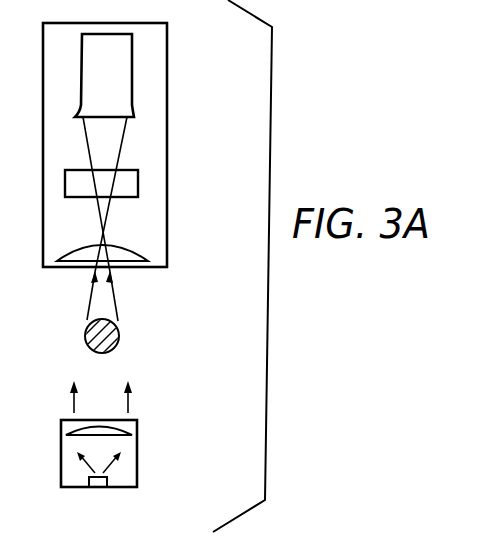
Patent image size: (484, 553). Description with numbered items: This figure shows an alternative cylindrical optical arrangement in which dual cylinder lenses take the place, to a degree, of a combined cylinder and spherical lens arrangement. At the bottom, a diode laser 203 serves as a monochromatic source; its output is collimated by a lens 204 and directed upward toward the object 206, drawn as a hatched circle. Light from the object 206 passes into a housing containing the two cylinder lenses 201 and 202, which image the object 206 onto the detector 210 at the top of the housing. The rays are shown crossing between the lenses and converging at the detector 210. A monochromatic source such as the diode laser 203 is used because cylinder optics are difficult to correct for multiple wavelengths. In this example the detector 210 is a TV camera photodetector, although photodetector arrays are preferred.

The detector 210 is at (132, 75).
The cylinder lens 202 is at (138, 183).
The cylinder lens 201 is at (138, 250).
The object 206 is at (119, 332).
The collimating lens 204 is at (132, 431).
The diode laser 203 is at (98, 488).